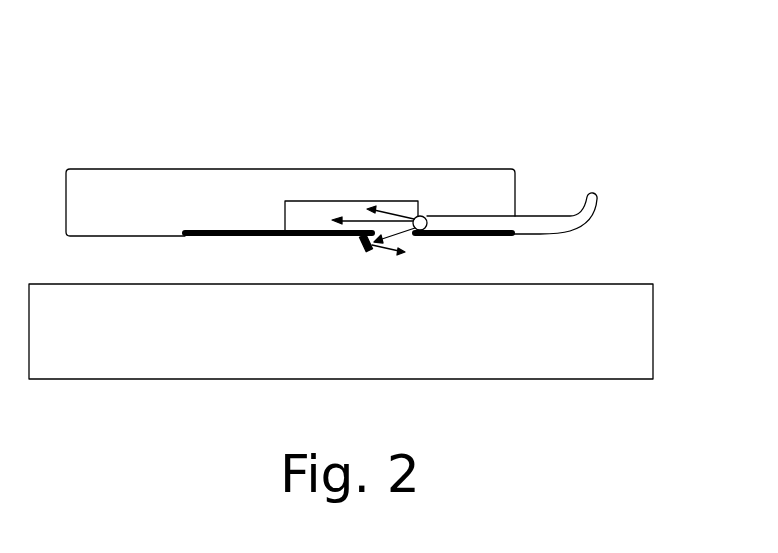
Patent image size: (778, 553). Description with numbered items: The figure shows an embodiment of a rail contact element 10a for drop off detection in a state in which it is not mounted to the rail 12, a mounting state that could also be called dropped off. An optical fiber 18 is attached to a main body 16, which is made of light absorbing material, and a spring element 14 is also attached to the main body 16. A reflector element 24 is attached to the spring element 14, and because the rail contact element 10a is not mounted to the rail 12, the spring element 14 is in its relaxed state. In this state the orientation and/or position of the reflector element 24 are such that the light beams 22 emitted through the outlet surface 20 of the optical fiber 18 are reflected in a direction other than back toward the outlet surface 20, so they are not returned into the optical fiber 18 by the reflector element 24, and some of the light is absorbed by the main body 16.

The rail contact element 10a is at (545, 107).
The rail 12 is at (139, 345).
The spring element 14 is at (242, 232).
The main body 16 is at (139, 215).
The optical fiber 18 is at (594, 205).
The outlet surface 20 is at (424, 217).
The light beams 22 is at (386, 236).
The reflector element 24 is at (366, 251).